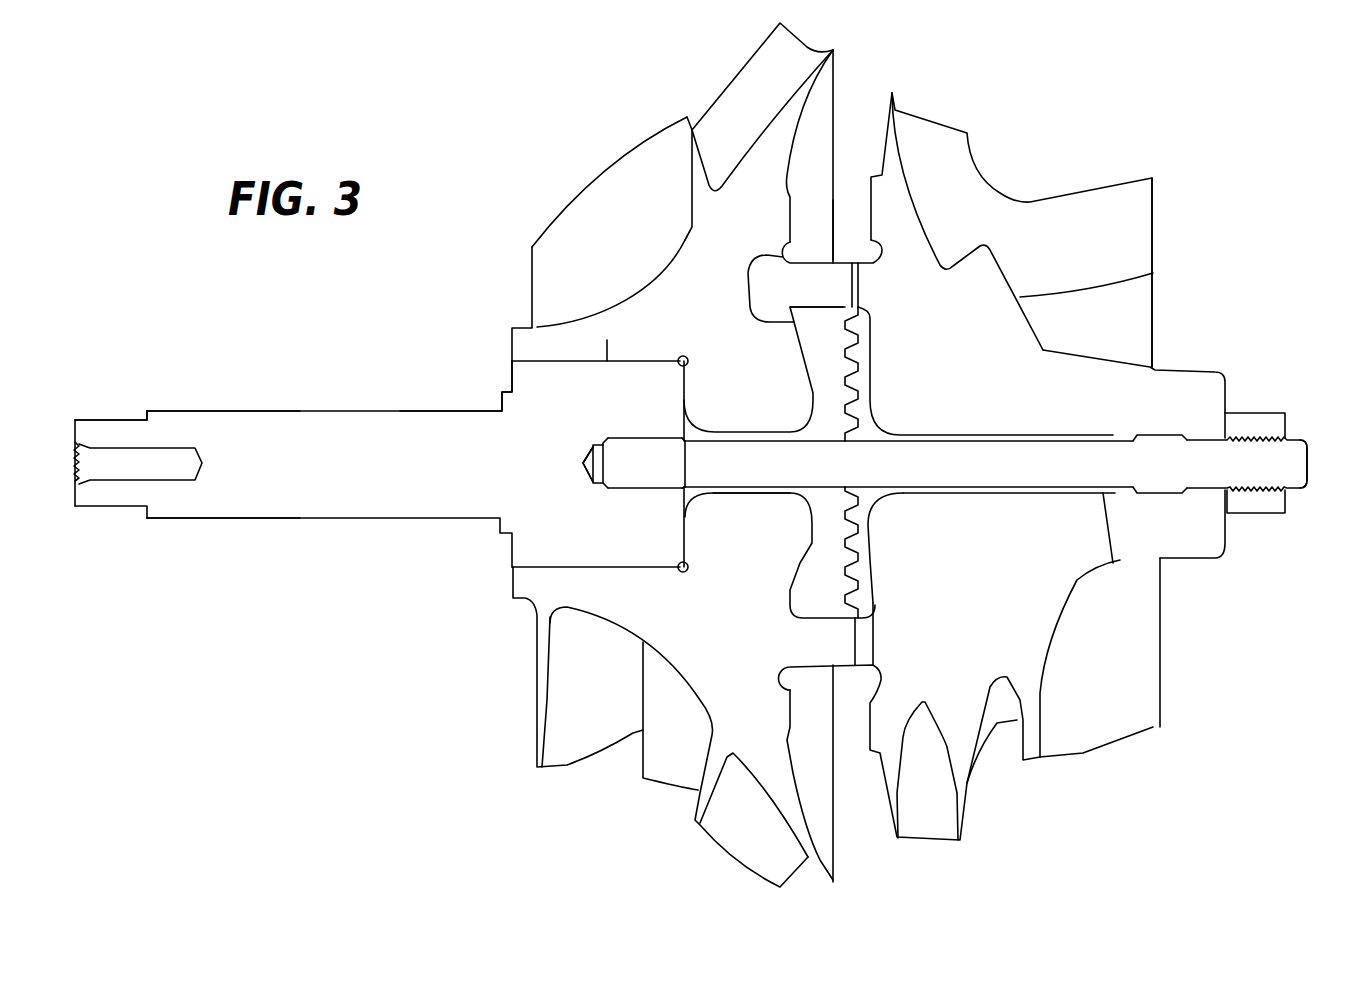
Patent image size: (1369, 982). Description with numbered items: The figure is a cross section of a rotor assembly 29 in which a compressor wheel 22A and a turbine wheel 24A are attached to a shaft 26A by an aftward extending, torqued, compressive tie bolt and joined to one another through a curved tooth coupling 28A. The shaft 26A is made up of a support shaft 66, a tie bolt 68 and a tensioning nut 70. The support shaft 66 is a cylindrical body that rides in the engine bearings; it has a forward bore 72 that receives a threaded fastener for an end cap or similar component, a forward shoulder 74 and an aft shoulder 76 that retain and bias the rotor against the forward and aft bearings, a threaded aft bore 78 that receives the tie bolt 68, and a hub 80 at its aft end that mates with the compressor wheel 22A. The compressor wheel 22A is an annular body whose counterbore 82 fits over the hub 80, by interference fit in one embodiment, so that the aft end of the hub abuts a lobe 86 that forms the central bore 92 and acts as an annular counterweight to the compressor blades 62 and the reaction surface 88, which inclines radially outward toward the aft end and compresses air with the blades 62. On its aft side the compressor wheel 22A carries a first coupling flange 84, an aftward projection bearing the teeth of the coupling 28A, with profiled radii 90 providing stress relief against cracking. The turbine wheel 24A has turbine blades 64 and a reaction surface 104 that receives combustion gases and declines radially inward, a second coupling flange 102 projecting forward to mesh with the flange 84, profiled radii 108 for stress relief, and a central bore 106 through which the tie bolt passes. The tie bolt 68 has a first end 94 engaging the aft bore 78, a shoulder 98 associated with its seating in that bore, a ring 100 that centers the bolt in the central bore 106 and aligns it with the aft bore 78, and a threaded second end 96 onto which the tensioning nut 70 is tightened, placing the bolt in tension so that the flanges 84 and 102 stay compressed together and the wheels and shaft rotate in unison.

The compressor wheel 22A is at (521, 341).
The turbine wheel 24A is at (1185, 383).
The shaft 26A is at (286, 534).
The curved tooth coupling 28A is at (843, 262).
The rotor assembly 29 is at (1132, 142).
The compressor blades 62 is at (587, 207).
The turbine blades 64 is at (955, 175).
The support shaft 66 is at (375, 512).
The tie bolt 68 is at (1298, 475).
The tensioning nut 70 is at (1260, 517).
The forward bore 72 is at (73, 463).
The forward shoulder 74 is at (145, 418).
The aft shoulder 76 is at (427, 408).
The aft bore 78 is at (583, 463).
The hub 80 is at (513, 558).
The counterbore 82 is at (607, 360).
The first coupling flange 84 is at (824, 464).
The lobe 86 is at (779, 462).
The reaction surface 88 is at (670, 265).
The profiled radii 90 is at (764, 288).
The central bore 92 is at (747, 497).
The first end 94 is at (634, 463).
The second end 96 is at (996, 464).
The shoulder 98 is at (683, 442).
The ring 100 is at (1113, 437).
The second coupling flange 102 is at (872, 283).
The reaction surface 104 is at (1155, 275).
The central bore 106 is at (1120, 562).
The profiled radii 108 is at (873, 603).